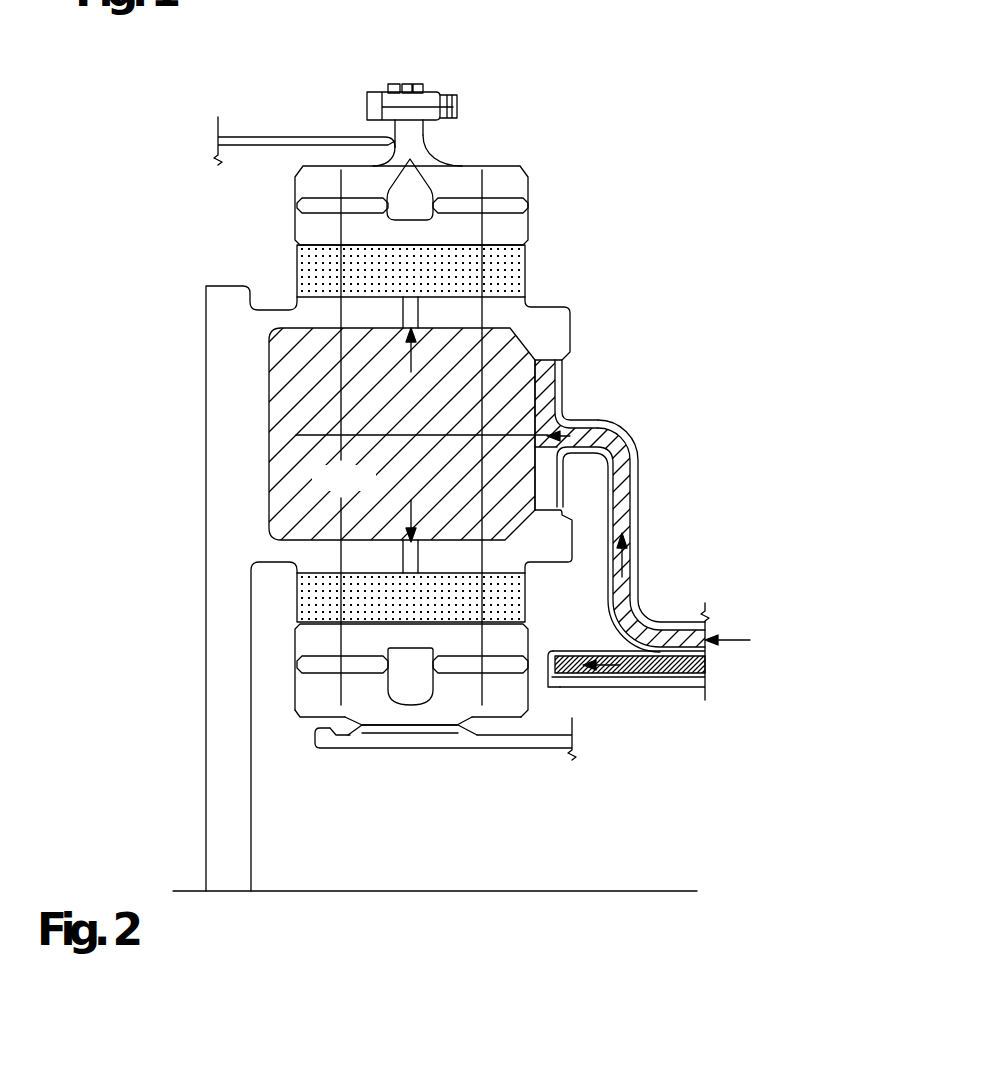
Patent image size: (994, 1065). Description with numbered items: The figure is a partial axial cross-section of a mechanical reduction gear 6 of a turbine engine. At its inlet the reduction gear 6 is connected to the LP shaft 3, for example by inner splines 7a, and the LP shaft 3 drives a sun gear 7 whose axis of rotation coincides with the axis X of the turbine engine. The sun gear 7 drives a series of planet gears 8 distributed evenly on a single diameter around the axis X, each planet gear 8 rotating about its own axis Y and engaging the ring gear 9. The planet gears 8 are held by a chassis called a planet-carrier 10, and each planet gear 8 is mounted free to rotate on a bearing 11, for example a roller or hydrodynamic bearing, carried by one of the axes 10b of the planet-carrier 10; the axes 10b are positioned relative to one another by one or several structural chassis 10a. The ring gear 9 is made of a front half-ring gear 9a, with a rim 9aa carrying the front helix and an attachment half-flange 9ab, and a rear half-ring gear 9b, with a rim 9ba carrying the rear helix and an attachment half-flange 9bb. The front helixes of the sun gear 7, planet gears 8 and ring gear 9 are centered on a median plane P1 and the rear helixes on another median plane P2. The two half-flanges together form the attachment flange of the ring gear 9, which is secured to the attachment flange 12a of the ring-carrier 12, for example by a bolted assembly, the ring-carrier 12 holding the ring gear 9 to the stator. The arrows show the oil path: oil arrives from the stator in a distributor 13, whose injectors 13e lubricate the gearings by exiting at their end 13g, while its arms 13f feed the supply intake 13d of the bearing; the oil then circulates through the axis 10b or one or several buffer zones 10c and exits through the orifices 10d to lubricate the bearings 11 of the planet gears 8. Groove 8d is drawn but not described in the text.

The LP shaft 3 is at (498, 667).
The reduction gear 6 is at (660, 250).
The sun gear 7 is at (305, 690).
The inner splines 7a is at (390, 730).
The planet gears 8 is at (300, 640).
The groove 8d is at (300, 662).
The ring gear 9 is at (535, 161).
The front half-ring gear 9a is at (287, 187).
The rim 9aa is at (320, 177).
The attachment half-flange 9ab is at (400, 84).
The rear half-ring gear 9b is at (527, 187).
The rim 9ba is at (468, 177).
The attachment half-flange 9bb is at (417, 84).
The planet-carrier 10 is at (572, 310).
The structural chassis 10a is at (230, 385).
The axes 10b is at (557, 542).
The buffer zones 10c is at (402, 434).
The orifices 10d is at (412, 322).
The bearing 11 is at (515, 262).
The ring-carrier 12 is at (258, 137).
The attachment flange 12a is at (390, 88).
The distributor 13 is at (705, 588).
The supply intake 13d is at (563, 380).
The injectors 13e is at (653, 678).
The arms 13f is at (637, 495).
The end 13g is at (548, 690).
The median plane P1 is at (340, 703).
The median plane P2 is at (480, 697).
The axis of rotation X is at (672, 892).
The axis Y is at (562, 402).